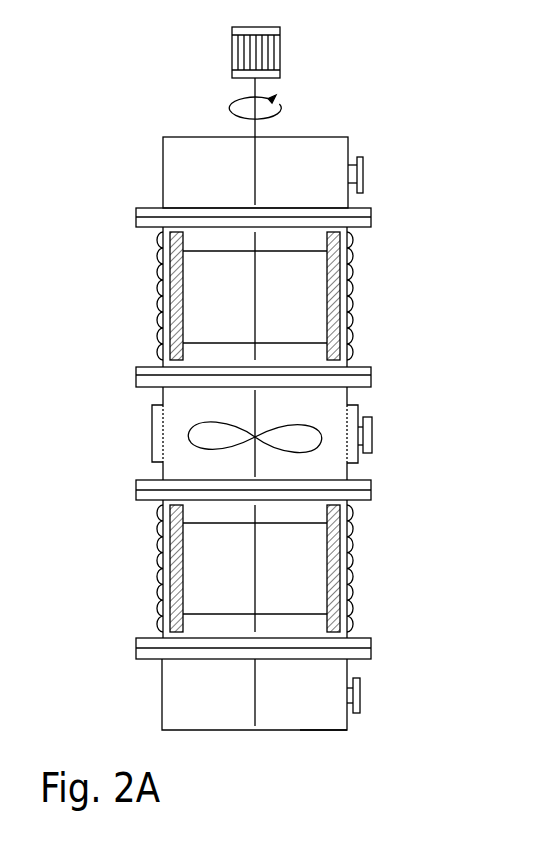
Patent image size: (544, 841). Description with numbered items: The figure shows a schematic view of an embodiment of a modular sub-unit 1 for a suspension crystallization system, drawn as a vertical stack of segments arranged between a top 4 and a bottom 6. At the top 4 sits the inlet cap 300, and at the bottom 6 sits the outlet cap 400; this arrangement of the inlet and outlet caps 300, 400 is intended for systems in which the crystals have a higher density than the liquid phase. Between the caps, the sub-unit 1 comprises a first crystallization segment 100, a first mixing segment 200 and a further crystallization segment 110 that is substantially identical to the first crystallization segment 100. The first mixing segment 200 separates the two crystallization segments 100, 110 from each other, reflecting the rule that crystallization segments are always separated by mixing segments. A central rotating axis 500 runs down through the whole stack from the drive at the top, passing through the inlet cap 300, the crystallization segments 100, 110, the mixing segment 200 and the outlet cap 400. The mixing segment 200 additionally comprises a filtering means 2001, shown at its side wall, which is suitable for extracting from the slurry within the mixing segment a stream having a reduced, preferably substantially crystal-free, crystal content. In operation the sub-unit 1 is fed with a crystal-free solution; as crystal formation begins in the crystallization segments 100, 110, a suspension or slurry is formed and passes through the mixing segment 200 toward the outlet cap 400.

The modular sub-unit 1 is at (403, 72).
The top 4 is at (335, 202).
The bottom 6 is at (330, 722).
The first crystallization segment 100 is at (195, 355).
The further crystallization segment 110 is at (193, 627).
The first mixing segment 200 is at (193, 470).
The filtering means 2001 is at (406, 434).
The inlet cap 300 is at (195, 177).
The outlet cap 400 is at (192, 723).
The central rotating axis 500 is at (255, 135).